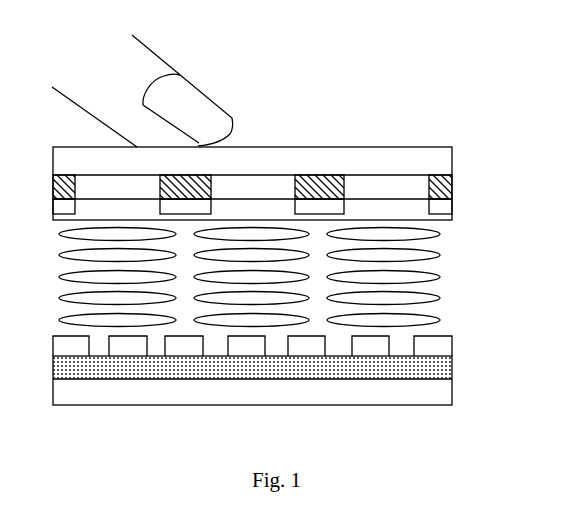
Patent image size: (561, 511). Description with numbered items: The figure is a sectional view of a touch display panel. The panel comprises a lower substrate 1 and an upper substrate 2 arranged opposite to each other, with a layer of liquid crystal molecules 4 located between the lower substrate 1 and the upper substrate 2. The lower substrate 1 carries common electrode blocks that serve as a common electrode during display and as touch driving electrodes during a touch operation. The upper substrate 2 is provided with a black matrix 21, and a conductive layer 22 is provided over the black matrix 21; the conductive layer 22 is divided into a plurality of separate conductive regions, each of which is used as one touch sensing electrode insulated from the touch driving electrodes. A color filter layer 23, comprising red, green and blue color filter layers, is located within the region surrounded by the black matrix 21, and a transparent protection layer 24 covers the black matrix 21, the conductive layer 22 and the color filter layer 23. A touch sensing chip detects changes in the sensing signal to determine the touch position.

The lower substrate 1 is at (455, 336).
The upper substrate 2 is at (455, 147).
The layer of liquid crystal molecules 4 is at (455, 228).
The black matrix 21 is at (338, 183).
The conductive layer 22 is at (302, 205).
The color filter layer 23 is at (375, 183).
The transparent protection layer 24 is at (405, 210).